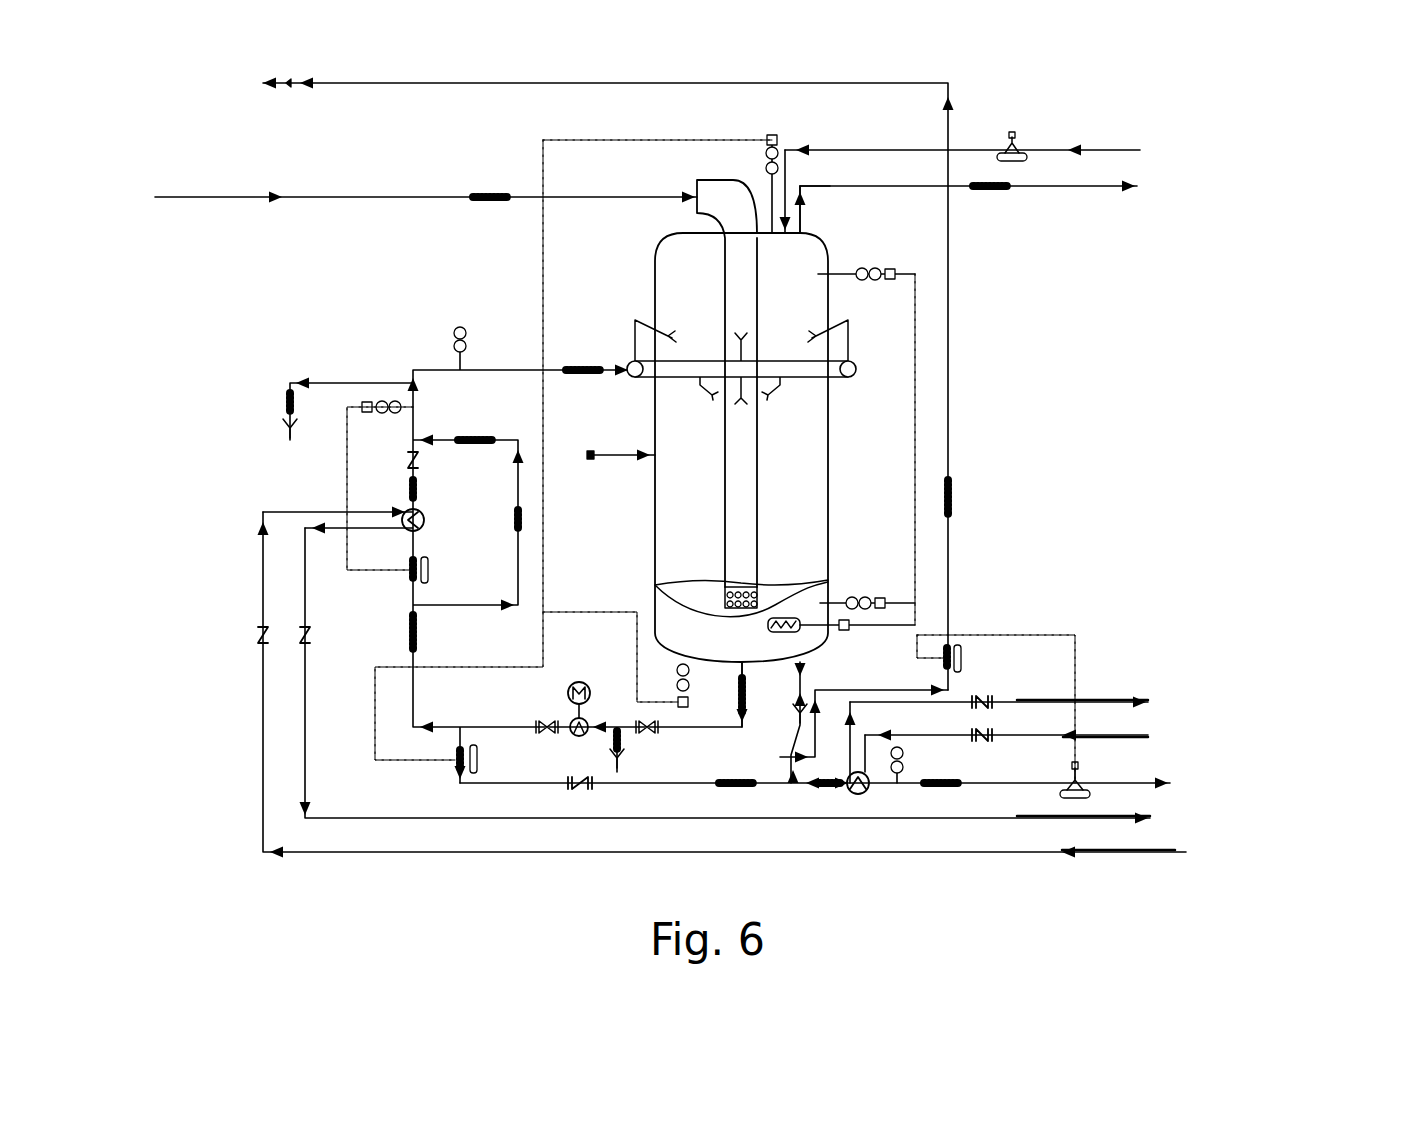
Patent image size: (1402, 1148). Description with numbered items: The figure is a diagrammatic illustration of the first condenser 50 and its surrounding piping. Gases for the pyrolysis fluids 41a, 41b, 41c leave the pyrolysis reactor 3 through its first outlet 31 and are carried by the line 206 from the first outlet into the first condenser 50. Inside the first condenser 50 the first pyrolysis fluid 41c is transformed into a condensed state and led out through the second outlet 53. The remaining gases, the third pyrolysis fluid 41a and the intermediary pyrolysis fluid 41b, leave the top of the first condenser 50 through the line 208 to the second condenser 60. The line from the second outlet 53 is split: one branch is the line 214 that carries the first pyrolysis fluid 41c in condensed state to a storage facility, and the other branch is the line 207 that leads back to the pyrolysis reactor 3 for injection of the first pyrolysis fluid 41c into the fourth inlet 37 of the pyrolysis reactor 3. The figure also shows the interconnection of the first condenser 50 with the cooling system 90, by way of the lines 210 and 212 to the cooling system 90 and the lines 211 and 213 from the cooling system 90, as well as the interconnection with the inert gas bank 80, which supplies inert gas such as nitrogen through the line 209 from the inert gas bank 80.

The first condenser 50 is at (608, 324).
The second outlet 53 is at (733, 672).
The pyrolysis reactor 3 is at (538, 365).
The first outlet 31 is at (356, 234).
The fourth inlet 37 is at (538, 365).
The third pyrolysis fluid 41a is at (959, 242).
The intermediary pyrolysis fluid 41b is at (959, 242).
The first pyrolysis fluid 41c is at (924, 796).
The second condenser 60 is at (1084, 199).
The inert gas bank 80 is at (1071, 135).
The cooling system 90 is at (1085, 685).
The line from first outlet of pyrolysis reactor 206 is at (356, 234).
The line to fourth inlet of pyrolysis reactor 207 is at (538, 365).
The line to second condenser 208 is at (1084, 199).
The line from inert gas bank 209 is at (1071, 135).
The line to cooling system 210 is at (1085, 685).
The line from cooling system 211 is at (1118, 744).
The line to cooling system 212 is at (780, 688).
The line from cooling system 213 is at (780, 697).
The line for first pyrolysis fluid in condensed state to a storage facility 214 is at (924, 796).